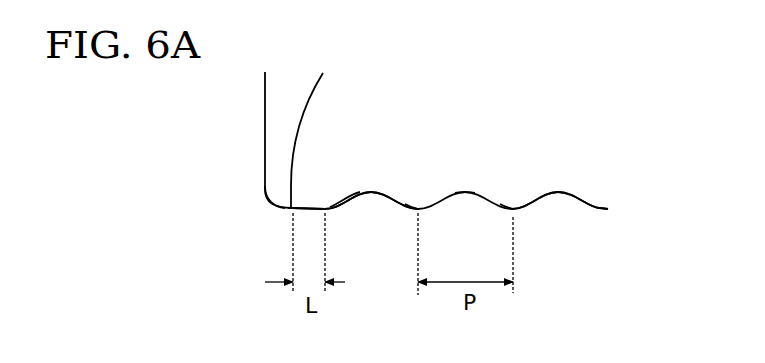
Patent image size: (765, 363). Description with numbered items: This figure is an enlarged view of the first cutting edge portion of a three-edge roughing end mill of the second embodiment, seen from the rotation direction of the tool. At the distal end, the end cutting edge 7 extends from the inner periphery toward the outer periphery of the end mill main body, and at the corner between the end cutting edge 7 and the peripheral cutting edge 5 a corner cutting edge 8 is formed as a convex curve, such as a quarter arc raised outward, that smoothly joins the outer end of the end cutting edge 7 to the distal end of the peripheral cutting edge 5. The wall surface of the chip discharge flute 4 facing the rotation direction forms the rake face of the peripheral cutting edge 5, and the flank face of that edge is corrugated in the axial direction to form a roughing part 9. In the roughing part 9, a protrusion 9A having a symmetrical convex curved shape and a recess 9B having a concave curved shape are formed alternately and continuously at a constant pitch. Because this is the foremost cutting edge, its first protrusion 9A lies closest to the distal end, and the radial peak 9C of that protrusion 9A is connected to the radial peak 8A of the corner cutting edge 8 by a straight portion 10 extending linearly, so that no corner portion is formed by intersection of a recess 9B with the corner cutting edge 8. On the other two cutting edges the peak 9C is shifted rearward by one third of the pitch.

The chip discharge flute 4 is at (492, 117).
The end cutting edge 7 is at (265, 129).
The corner cutting edge 8 is at (272, 202).
The peak of the corner cutting edge 8A is at (293, 210).
The peripheral cutting edge 5 is at (415, 257).
The straight portion 10 is at (324, 210).
The roughing part 9 is at (597, 210).
The protrusion 9A is at (402, 209).
The recess 9B is at (467, 193).
The peak of the protrusion 9C is at (513, 210).